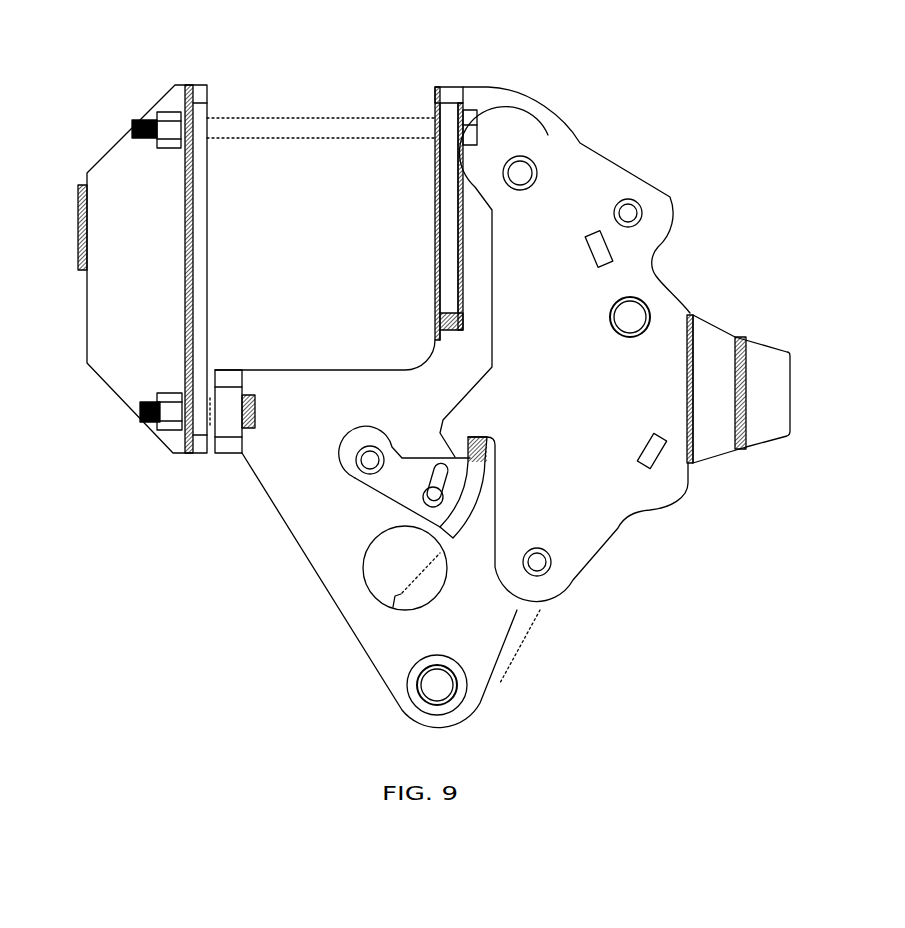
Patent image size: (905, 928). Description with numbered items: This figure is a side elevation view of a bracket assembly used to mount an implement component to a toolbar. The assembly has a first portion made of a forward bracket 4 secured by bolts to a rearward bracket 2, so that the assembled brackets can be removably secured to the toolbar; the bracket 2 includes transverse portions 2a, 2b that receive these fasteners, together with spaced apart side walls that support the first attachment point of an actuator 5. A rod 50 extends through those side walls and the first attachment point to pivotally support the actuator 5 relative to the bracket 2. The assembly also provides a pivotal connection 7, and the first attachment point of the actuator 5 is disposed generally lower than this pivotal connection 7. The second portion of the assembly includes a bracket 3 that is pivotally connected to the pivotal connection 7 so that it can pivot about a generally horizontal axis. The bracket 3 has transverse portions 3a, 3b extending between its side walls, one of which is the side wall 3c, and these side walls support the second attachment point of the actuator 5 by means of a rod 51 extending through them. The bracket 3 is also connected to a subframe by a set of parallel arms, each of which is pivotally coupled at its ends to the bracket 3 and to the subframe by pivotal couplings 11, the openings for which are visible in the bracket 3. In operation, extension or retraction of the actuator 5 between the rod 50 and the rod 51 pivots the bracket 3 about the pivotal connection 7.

The rearward bracket 2 is at (330, 520).
The transverse portion 2a is at (226, 445).
The transverse portion 2b is at (448, 93).
The bracket 3 is at (640, 257).
The transverse portion 3a is at (593, 258).
The transverse portion 3b is at (647, 438).
The side wall 3c is at (610, 522).
The forward bracket 4 is at (130, 322).
The actuator 5 is at (520, 628).
The pivotal connection 7 is at (527, 163).
The pivotal coupling 11 is at (630, 213).
The rod 50 is at (437, 685).
The rod 51 is at (633, 318).